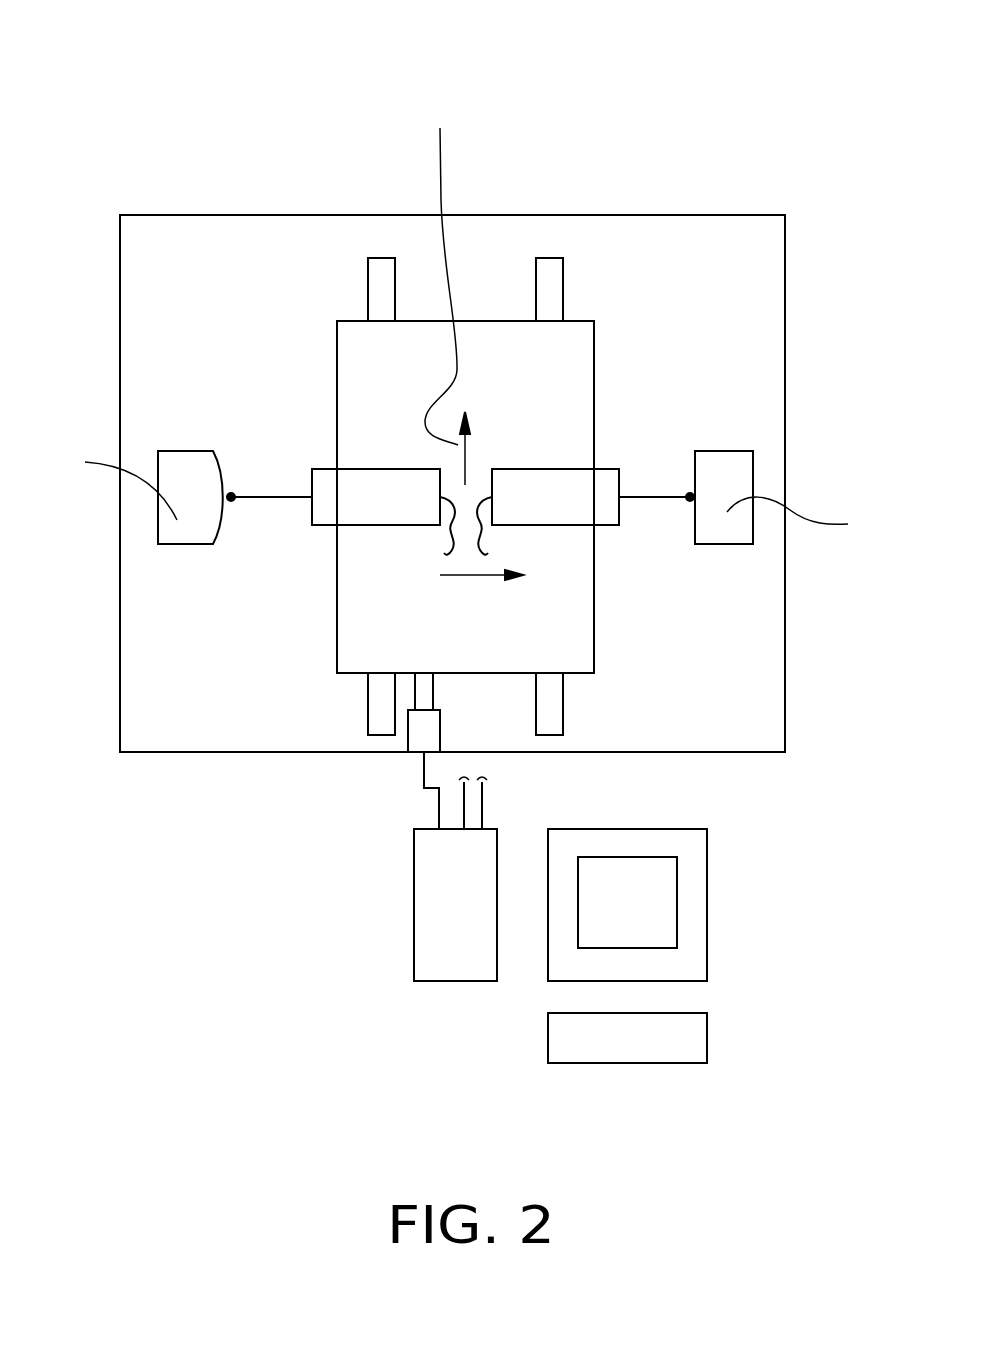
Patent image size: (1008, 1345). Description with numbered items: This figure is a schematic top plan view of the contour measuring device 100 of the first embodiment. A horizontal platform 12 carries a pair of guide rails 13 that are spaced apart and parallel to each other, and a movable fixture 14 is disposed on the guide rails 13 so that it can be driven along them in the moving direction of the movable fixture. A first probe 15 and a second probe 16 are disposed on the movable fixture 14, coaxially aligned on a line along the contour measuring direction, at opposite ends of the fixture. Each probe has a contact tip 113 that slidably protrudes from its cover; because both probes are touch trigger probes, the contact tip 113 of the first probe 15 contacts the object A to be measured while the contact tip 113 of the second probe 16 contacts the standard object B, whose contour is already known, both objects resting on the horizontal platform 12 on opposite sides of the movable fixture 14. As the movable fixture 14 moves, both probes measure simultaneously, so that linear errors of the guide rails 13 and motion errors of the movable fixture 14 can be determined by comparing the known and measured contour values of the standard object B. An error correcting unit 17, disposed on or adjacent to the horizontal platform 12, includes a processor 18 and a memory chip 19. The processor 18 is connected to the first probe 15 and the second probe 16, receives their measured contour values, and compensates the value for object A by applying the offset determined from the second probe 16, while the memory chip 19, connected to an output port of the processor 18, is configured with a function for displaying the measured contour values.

The contour measuring device 100 is at (436, 42).
The horizontal platform 12 is at (214, 722).
The guide rails 13 is at (378, 712).
The movable fixture 14 is at (565, 622).
The first probe 15 is at (390, 493).
The second probe 16 is at (578, 498).
The contact tip 113 is at (268, 498).
The error correcting unit 17 is at (572, 895).
The processor 18 is at (443, 915).
The memory chip 19 is at (693, 918).